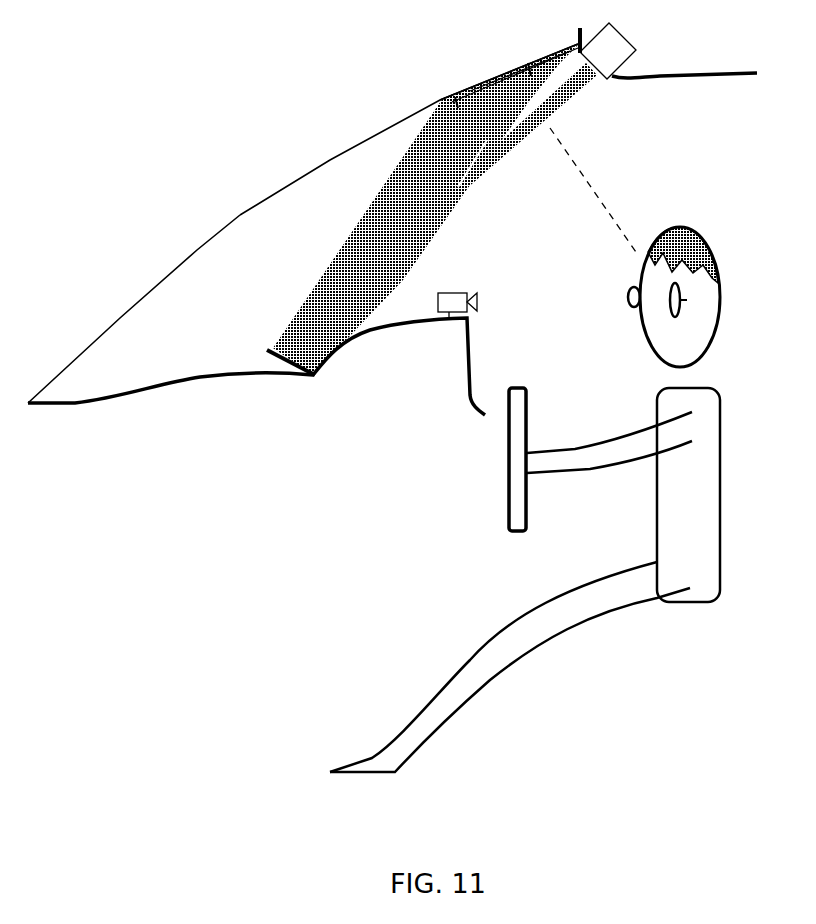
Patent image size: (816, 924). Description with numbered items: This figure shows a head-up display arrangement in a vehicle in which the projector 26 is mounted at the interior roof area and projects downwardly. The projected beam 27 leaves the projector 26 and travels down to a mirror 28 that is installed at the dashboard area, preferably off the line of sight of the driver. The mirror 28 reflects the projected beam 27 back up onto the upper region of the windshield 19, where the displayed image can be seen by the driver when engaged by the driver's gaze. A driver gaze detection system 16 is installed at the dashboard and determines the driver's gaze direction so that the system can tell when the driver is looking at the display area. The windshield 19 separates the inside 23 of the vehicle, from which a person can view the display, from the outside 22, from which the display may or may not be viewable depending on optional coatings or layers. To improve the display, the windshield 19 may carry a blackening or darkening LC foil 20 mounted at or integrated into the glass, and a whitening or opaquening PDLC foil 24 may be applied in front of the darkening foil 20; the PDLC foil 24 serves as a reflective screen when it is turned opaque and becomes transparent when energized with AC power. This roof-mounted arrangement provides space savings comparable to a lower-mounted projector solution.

The driver gaze detection system 16 is at (449, 303).
The windshield 19 is at (438, 99).
The darkening foil 20 is at (488, 81).
The outside 22 is at (134, 309).
The inside 23 is at (402, 155).
The PDLC foil 24 is at (530, 66).
The projector 26 is at (608, 51).
The projected beam 27 is at (403, 197).
The mirror 28 is at (290, 357).